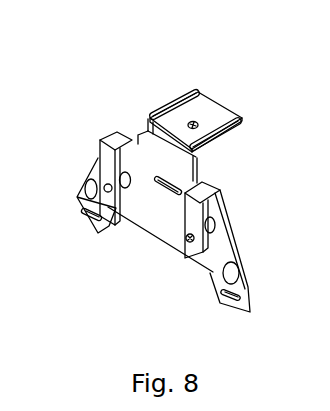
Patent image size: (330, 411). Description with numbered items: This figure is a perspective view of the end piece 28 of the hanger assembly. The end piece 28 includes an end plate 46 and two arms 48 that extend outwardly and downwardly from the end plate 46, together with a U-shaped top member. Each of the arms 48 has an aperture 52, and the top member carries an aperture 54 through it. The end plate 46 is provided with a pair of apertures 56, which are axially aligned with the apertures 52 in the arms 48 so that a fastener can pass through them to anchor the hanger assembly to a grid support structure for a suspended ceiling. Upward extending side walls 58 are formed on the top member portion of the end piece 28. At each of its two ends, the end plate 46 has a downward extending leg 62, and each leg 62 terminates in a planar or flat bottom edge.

The end piece 28 is at (97, 84).
The end plate 46 is at (243, 250).
The arms 48 is at (107, 165).
The aperture 52 is at (190, 241).
The aperture 54 is at (198, 121).
The apertures 56 is at (213, 220).
The side walls 58 is at (172, 101).
The downward extending leg 62 is at (78, 217).